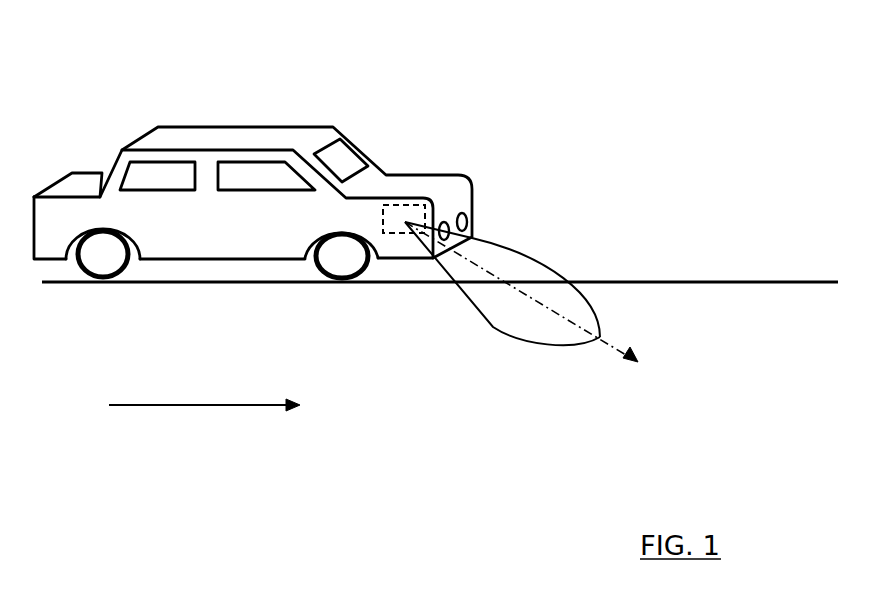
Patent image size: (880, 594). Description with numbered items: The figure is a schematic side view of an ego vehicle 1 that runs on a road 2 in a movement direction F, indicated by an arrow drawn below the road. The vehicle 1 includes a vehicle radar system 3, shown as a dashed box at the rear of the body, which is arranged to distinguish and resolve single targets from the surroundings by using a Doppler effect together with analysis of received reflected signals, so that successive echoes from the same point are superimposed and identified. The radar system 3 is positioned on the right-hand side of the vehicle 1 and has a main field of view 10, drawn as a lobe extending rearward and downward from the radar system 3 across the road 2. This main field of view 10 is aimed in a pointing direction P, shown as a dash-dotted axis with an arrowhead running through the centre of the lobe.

The ego vehicle 1 is at (303, 72).
The road 2 is at (703, 283).
The vehicle radar system 3 is at (410, 200).
The main field of view 10 is at (568, 300).
The pointing direction P is at (537, 293).
The movement direction F is at (204, 394).